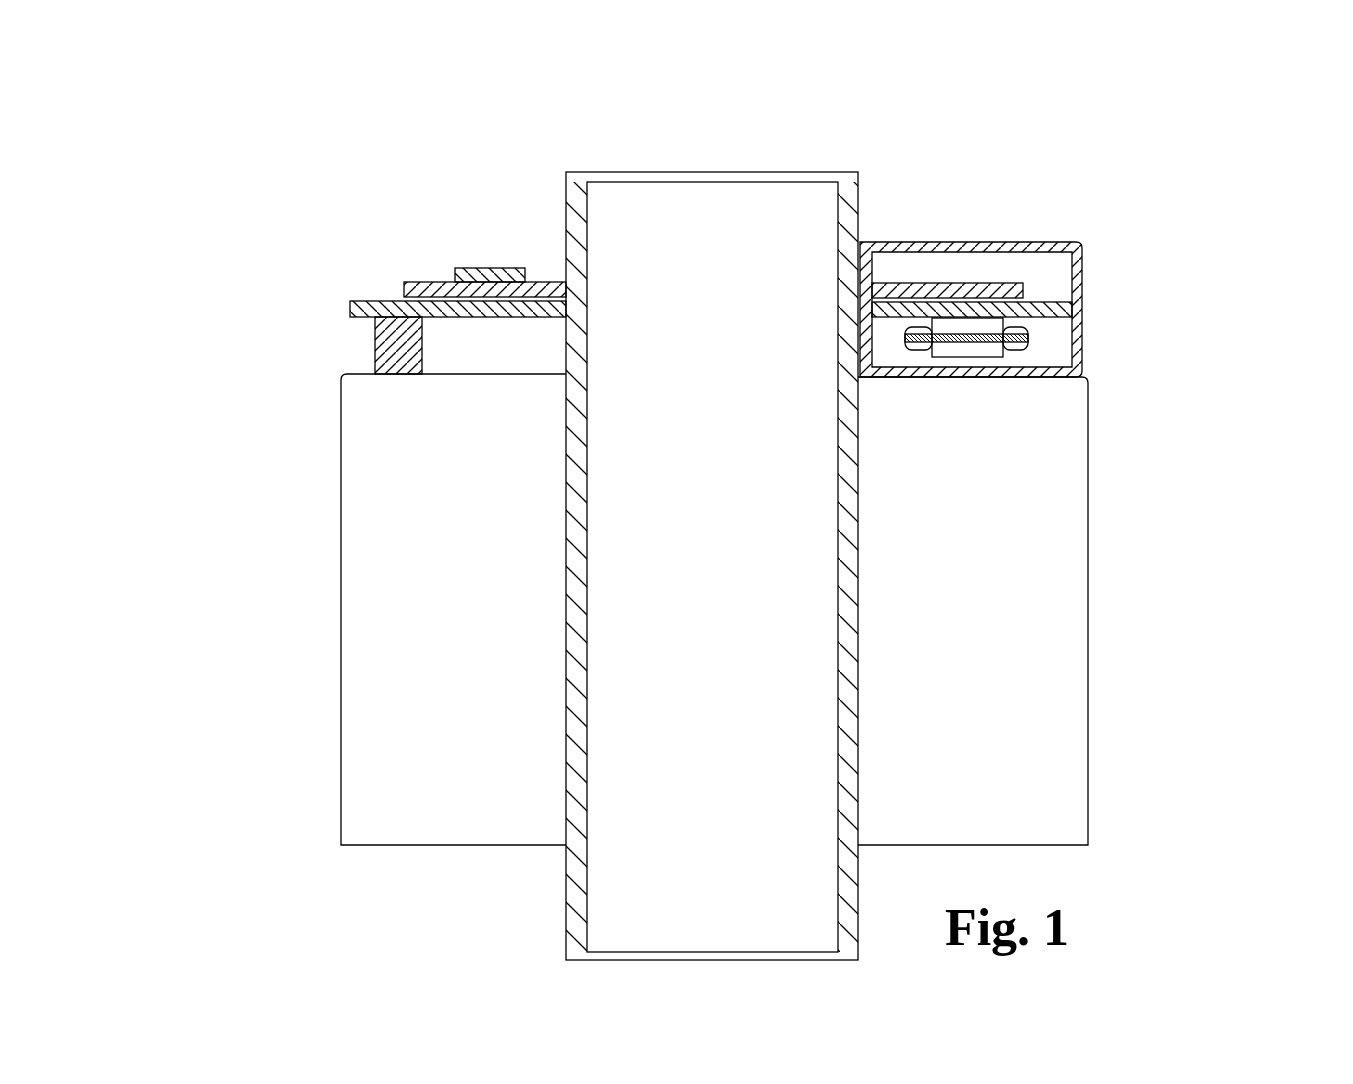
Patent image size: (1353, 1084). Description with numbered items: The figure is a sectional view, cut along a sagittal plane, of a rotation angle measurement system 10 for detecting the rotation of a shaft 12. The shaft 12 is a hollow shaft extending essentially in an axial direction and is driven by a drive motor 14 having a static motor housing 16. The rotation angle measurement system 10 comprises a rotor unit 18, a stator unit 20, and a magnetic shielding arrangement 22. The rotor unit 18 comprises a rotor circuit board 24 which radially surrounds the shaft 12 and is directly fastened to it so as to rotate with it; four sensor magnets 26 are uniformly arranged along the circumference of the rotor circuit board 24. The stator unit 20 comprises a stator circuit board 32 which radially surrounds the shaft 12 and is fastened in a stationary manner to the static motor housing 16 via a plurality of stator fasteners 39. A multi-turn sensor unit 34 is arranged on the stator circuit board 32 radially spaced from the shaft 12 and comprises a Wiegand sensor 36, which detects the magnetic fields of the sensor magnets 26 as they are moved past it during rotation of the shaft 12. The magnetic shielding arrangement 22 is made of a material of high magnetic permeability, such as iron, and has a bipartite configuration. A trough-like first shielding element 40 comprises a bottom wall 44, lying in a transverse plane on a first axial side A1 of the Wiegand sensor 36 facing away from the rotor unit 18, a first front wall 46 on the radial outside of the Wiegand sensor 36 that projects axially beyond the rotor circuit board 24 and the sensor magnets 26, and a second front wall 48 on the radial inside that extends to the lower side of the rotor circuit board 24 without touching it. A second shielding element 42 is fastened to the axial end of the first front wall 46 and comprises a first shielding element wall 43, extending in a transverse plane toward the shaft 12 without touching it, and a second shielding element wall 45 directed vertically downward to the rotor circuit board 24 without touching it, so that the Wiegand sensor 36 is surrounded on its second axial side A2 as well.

The rotation angle measurement system 10 is at (1076, 105).
The shaft 12 is at (577, 178).
The drive motor 14 is at (272, 542).
The static motor housing 16 is at (341, 606).
The rotor unit 18 is at (353, 276).
The stator unit 20 is at (313, 325).
The magnetic shielding arrangement 22 is at (1127, 317).
The rotor circuit board 24 is at (420, 282).
The sensor magnets 26 is at (470, 268).
The stator circuit board 32 is at (353, 308).
The multi-turn sensor unit 34 is at (872, 358).
The Wiegand sensor 36 is at (1065, 337).
The stator fasteners 39 is at (375, 340).
The first shielding element 40 is at (1119, 379).
The second shielding element 42 is at (912, 207).
The first shielding element wall 43 is at (973, 283).
The bottom wall 44 is at (1023, 378).
The second shielding element wall 45 is at (856, 262).
The first front wall 46 is at (1085, 284).
The second front wall 48 is at (860, 353).
The first axial side A1 is at (978, 405).
The second axial side A2 is at (975, 300).